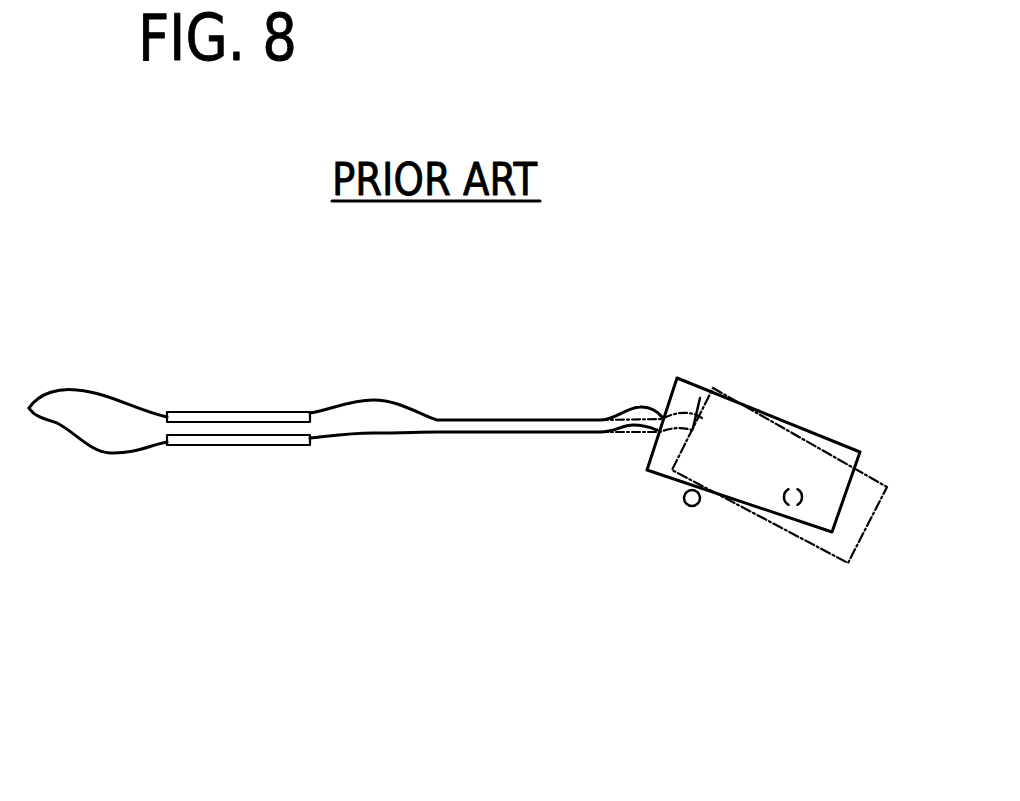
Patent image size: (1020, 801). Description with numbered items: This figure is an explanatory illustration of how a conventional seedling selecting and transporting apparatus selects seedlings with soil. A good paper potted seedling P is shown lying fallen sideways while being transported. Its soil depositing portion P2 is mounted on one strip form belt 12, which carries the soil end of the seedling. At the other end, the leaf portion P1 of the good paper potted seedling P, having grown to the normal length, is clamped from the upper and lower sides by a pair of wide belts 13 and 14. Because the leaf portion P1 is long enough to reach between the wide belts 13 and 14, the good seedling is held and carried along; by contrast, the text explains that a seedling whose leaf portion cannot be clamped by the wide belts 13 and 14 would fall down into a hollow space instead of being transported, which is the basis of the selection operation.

The wide belt 13 is at (212, 412).
The wide belt 14 is at (233, 445).
The leaf portion P1 is at (267, 398).
The good paper potted seedling P is at (652, 373).
The strip form belt 12 is at (689, 506).
The soil depositing portion P2 is at (765, 490).